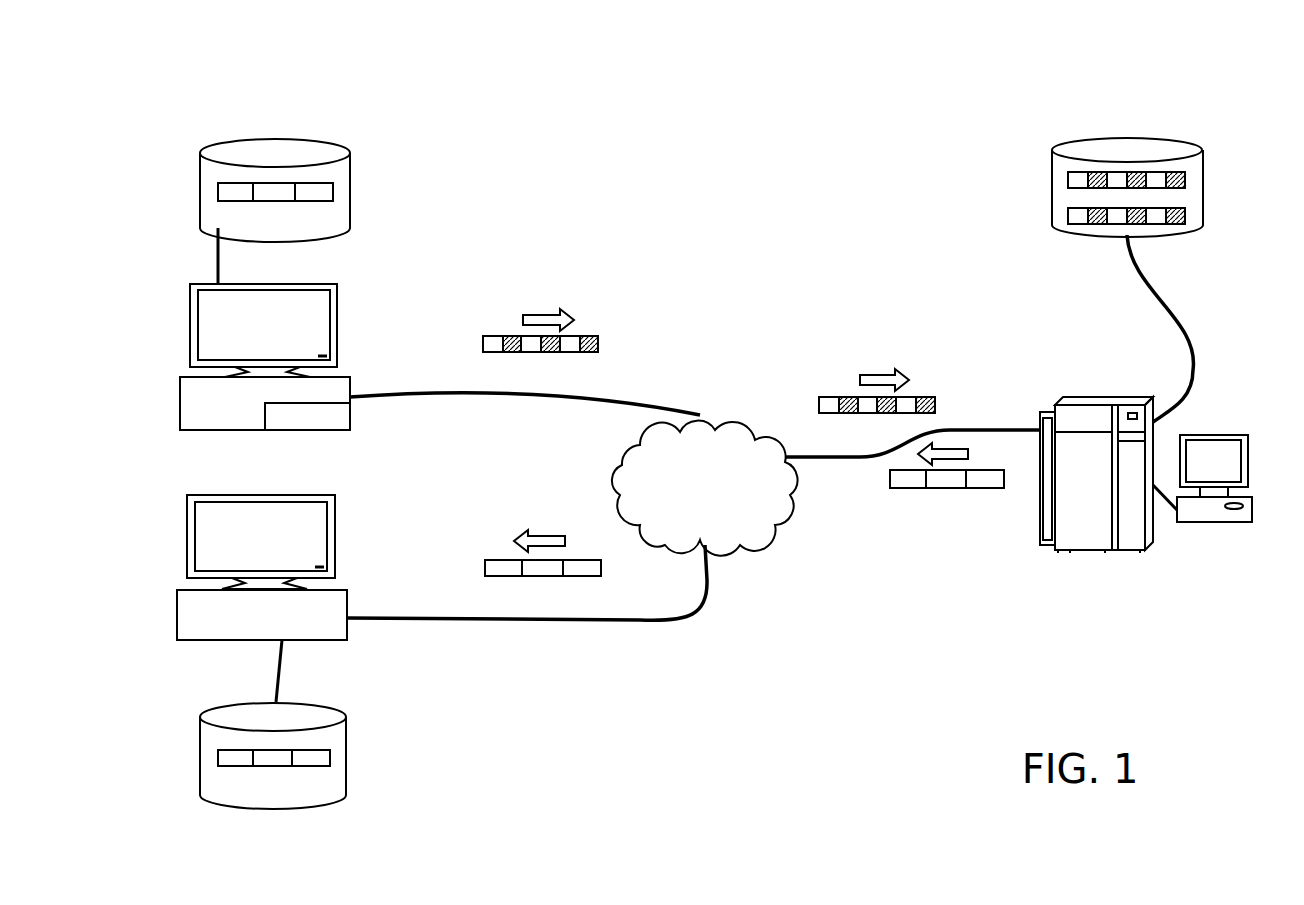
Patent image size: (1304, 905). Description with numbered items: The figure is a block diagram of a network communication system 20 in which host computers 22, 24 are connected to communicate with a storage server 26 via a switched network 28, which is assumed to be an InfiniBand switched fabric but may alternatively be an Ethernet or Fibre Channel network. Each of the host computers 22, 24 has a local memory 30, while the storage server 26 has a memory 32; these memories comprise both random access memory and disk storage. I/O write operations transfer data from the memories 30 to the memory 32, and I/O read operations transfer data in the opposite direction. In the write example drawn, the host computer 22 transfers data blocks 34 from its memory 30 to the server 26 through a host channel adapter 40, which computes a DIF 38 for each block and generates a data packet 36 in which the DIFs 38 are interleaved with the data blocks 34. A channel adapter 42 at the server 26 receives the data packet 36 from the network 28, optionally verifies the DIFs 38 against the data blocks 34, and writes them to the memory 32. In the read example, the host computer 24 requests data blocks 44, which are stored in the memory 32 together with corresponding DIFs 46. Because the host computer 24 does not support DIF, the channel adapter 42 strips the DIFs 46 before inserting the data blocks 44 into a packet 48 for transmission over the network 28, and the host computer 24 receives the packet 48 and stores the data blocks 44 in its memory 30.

The network communication system 20 is at (236, 94).
The host computer 22 is at (350, 382).
The host computer 24 is at (336, 520).
The storage server 26 is at (1093, 551).
The switched network 28 is at (760, 428).
The local memory 30 is at (352, 146).
The memory 32 is at (1205, 176).
The data block 34 is at (238, 201).
The data packet 36 is at (600, 355).
The DIF 38 is at (512, 335).
The host channel adapter 40 is at (352, 432).
The channel adapter 42 is at (1103, 417).
The data block 44 is at (235, 766).
The DIF 46 is at (1097, 226).
The packet 48 is at (604, 579).